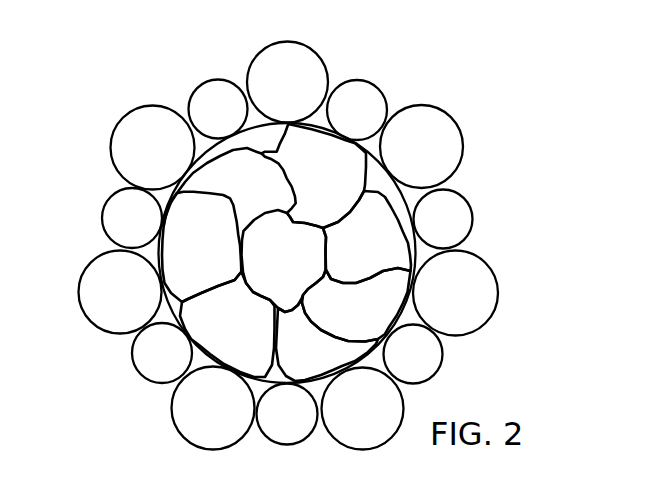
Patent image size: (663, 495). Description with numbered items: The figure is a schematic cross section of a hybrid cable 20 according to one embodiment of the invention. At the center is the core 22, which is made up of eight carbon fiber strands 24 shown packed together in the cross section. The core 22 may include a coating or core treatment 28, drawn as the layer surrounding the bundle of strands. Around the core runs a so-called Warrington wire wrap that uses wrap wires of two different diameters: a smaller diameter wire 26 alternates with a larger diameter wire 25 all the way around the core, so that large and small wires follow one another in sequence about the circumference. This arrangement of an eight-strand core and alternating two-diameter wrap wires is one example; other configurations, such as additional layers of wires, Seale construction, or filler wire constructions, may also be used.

The hybrid cable 20 is at (136, 96).
The core 22 is at (388, 240).
The carbon fiber strands 24 is at (388, 304).
The larger diameter wire 25 is at (404, 137).
The smaller diameter wire 26 is at (357, 97).
The coating or core treatment 28 is at (387, 187).